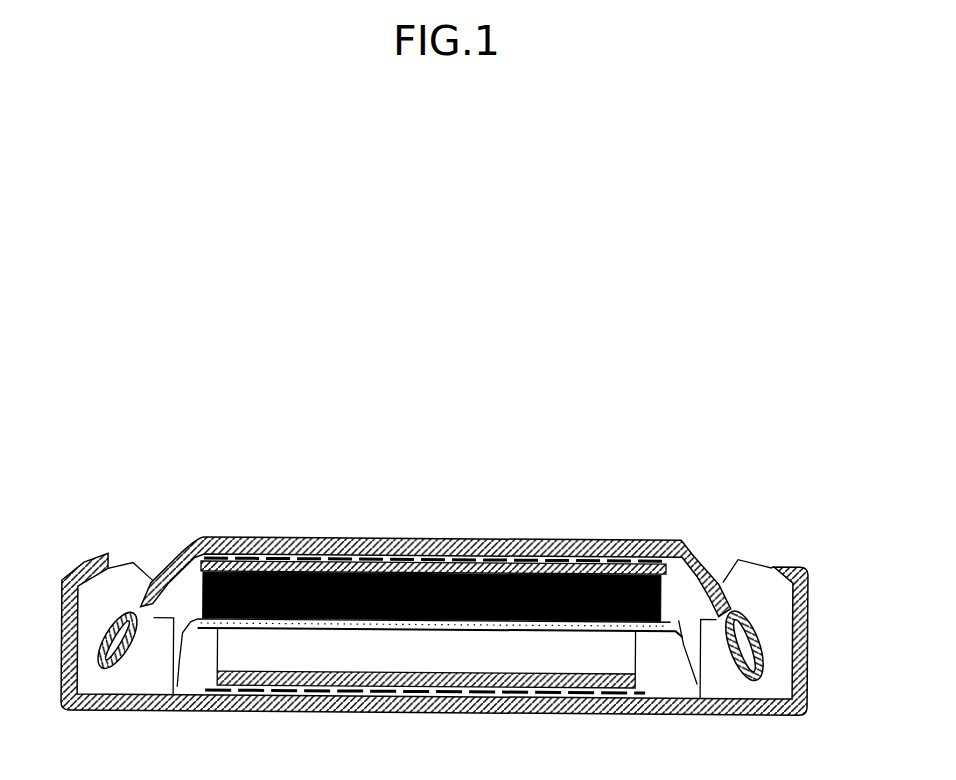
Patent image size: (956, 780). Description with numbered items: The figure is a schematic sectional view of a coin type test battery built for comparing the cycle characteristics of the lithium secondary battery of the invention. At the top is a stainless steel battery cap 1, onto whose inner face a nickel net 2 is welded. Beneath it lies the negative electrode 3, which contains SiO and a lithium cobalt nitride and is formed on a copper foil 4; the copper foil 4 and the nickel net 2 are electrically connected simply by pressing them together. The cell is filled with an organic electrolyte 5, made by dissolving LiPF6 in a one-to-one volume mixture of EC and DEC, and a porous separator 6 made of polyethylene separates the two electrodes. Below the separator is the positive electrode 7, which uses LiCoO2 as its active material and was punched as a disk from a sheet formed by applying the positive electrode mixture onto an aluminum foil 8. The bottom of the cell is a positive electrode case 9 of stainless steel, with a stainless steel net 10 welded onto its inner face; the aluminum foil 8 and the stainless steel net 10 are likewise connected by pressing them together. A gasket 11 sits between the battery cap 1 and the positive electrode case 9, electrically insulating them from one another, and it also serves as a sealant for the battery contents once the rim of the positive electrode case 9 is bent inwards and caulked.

The battery cap 1 is at (205, 538).
The nickel net 2 is at (253, 560).
The negative electrode 3 is at (341, 575).
The copper foil 4 is at (423, 575).
The organic electrolyte 5 is at (679, 602).
The porous separator 6 is at (683, 637).
The positive electrode 7 is at (532, 658).
The aluminum foil 8 is at (619, 677).
The positive electrode case 9 is at (803, 707).
The stainless steel net 10 is at (652, 695).
The gasket 11 is at (770, 593).